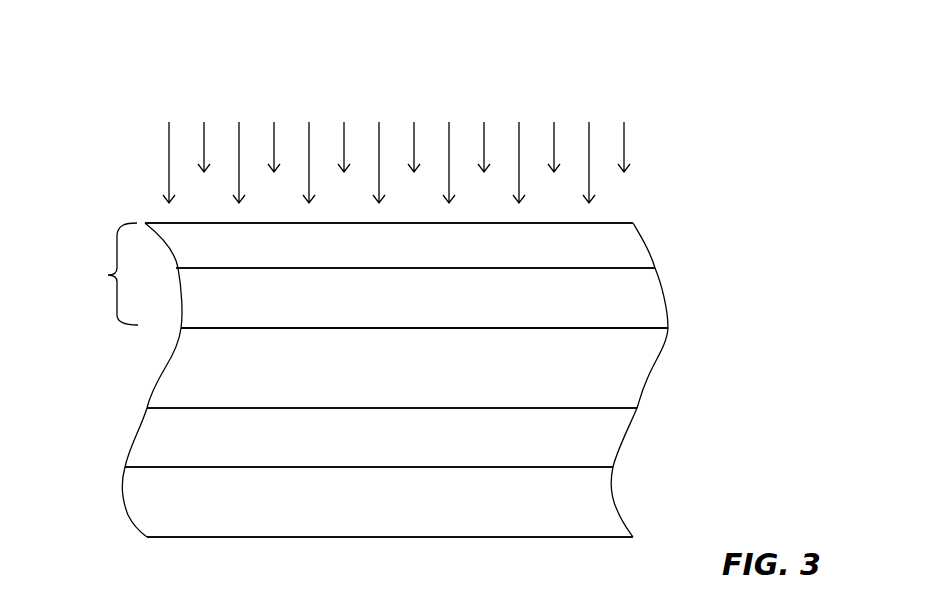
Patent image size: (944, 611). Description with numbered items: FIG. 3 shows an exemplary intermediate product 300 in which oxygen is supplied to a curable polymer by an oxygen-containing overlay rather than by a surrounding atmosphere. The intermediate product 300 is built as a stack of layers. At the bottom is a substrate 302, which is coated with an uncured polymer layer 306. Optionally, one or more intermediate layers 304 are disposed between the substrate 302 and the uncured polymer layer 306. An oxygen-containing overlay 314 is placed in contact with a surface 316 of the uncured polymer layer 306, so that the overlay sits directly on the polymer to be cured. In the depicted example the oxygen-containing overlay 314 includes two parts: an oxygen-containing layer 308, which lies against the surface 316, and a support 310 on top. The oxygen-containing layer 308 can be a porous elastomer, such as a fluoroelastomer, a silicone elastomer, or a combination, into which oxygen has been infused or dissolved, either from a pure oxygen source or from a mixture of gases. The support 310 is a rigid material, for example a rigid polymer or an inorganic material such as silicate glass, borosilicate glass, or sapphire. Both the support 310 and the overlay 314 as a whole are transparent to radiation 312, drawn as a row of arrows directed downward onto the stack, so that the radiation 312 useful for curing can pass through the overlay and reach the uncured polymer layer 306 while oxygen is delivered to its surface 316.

The intermediate product 300 is at (136, 182).
The substrate 302 is at (603, 513).
The intermediate layer 304 is at (607, 448).
The uncured polymer layer 306 is at (642, 375).
The oxygen-containing layer 308 is at (658, 305).
The support 310 is at (627, 247).
The radiation 312 is at (670, 126).
The oxygen-containing overlay 314 is at (95, 274).
The surface 316 is at (212, 332).